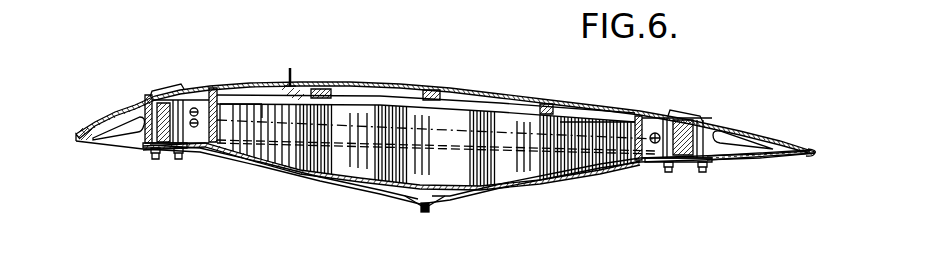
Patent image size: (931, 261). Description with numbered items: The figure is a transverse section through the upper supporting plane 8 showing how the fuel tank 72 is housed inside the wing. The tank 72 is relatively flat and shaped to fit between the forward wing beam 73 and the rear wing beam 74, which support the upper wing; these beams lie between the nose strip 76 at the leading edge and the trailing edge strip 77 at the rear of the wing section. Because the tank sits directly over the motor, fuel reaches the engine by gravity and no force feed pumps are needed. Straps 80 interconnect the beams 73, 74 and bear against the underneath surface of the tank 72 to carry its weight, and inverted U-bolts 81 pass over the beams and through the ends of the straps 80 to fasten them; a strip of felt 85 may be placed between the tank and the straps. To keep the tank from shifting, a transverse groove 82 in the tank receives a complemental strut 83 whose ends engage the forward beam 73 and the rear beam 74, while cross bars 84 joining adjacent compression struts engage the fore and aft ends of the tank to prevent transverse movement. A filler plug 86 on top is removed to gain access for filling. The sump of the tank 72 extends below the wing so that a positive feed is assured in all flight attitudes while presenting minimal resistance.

The upper supporting plane 8 is at (425, 206).
The fuel tank 72 is at (517, 113).
The forward wing beam 73 is at (165, 152).
The rear wing beam 74 is at (698, 163).
The nose strip 76 is at (77, 143).
The trailing edge strip 77 is at (813, 158).
The straps 80 is at (572, 177).
The inverted U-bolts 81 is at (710, 128).
The transverse groove 82 is at (523, 133).
The strut 83 is at (600, 117).
The cross bars 84 is at (653, 160).
The bottom skin 85 is at (322, 183).
The filler plug 86 is at (305, 90).